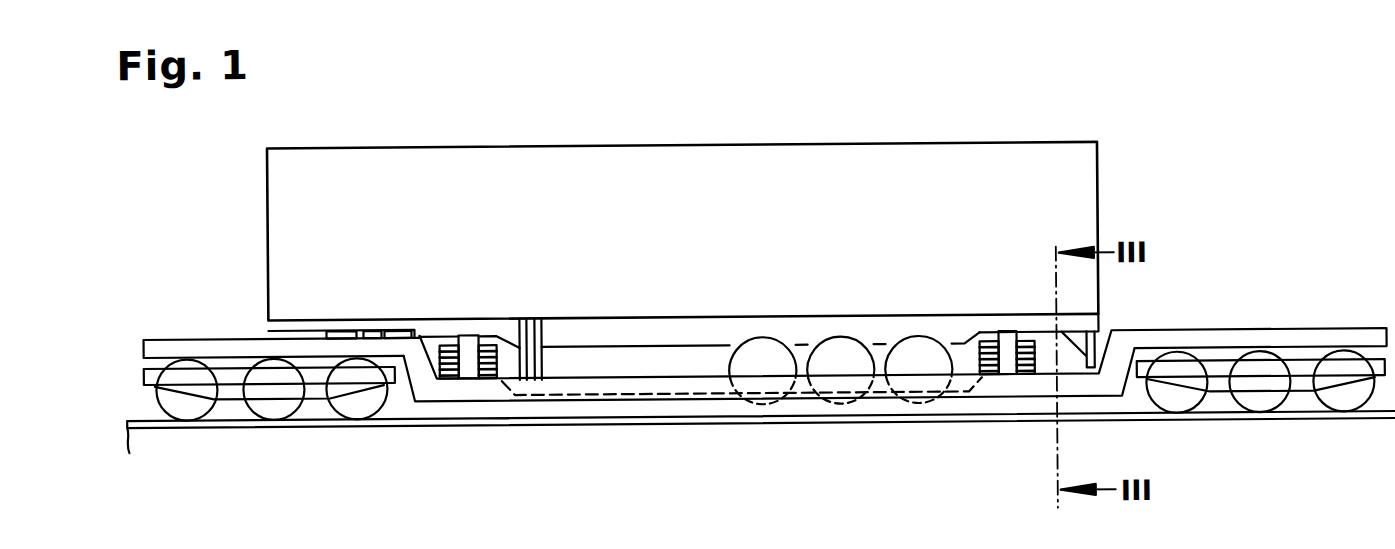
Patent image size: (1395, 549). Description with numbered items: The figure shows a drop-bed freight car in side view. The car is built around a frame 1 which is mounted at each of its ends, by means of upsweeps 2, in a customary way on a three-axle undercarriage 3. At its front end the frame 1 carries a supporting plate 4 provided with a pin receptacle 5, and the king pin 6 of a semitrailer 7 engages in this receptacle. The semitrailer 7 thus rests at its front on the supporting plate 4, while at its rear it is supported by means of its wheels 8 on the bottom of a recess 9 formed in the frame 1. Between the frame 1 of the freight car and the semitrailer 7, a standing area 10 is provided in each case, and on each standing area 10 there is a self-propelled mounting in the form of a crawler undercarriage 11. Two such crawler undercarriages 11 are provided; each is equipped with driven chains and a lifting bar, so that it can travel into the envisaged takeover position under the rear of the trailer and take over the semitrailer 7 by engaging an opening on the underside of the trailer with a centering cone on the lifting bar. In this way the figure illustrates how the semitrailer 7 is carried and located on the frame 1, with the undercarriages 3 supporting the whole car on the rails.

The frame 1 is at (603, 404).
The upsweeps 2 is at (210, 345).
The three-axle undercarriage 3 is at (307, 390).
The supporting plate 4 is at (343, 333).
The pin receptacle 5 is at (390, 333).
The king pin 6 is at (362, 333).
The semitrailer 7 is at (665, 175).
The wheels 8 is at (905, 350).
The recess 9 is at (795, 389).
The standing area 10 is at (467, 382).
The crawler undercarriage 11 is at (483, 345).